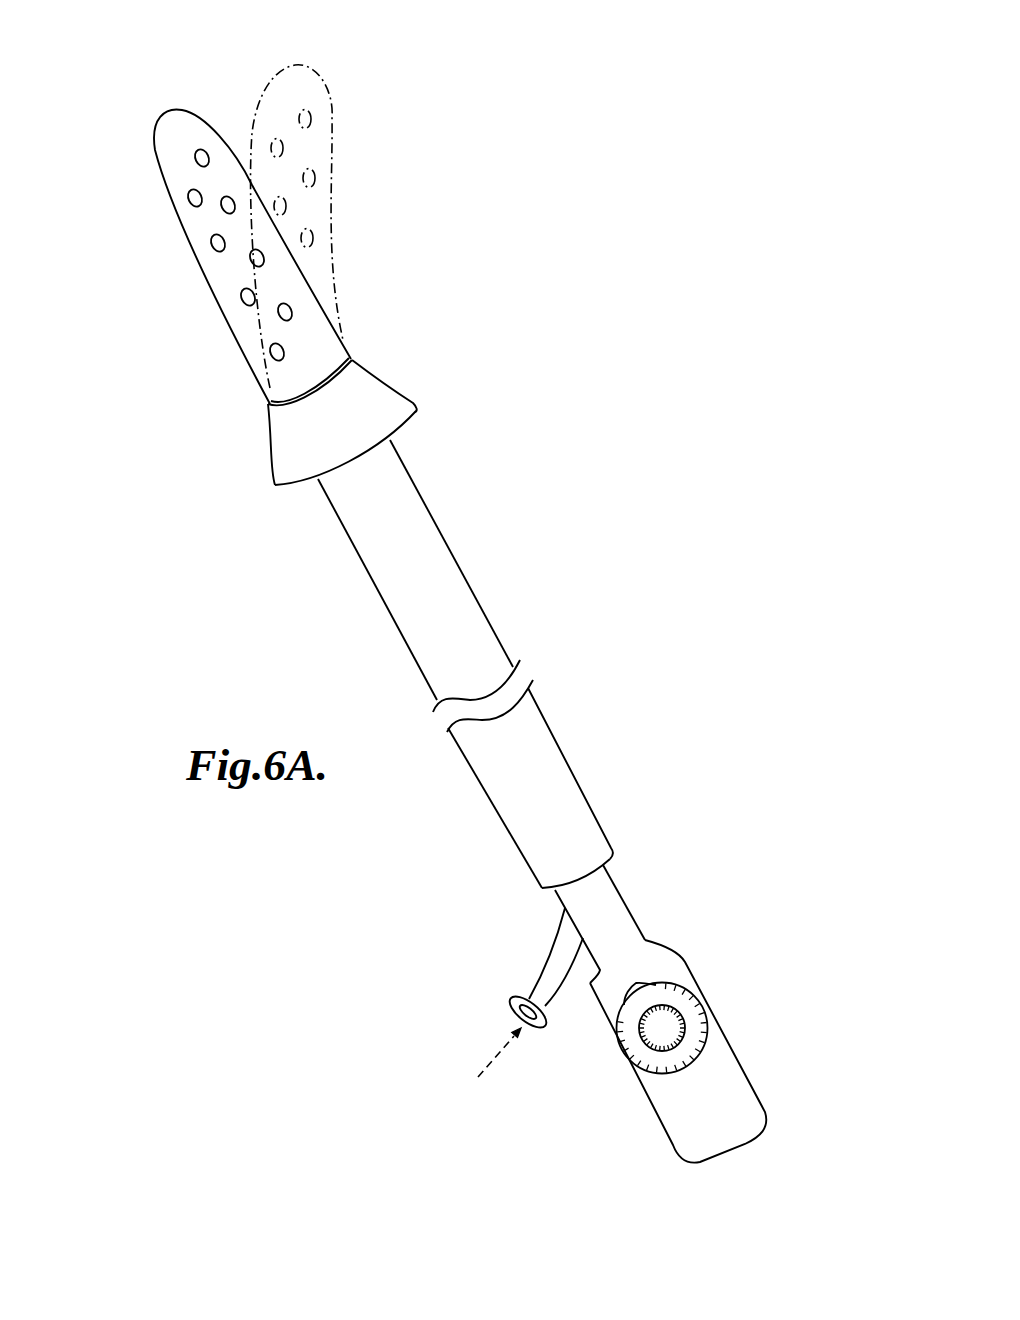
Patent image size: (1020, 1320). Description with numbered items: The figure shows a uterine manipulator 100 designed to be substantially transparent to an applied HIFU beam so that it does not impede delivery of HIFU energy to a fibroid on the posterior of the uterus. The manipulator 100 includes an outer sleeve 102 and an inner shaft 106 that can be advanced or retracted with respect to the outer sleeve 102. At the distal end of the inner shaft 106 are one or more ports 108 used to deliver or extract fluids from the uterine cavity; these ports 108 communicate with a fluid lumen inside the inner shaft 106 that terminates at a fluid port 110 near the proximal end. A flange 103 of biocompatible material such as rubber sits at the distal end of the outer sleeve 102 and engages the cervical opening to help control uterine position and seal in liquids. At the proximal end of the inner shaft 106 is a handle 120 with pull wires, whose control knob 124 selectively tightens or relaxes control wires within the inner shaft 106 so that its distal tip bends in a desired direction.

The uterine manipulator 100 is at (520, 347).
The outer sleeve 102 is at (388, 601).
The flange 103 is at (392, 392).
The inner shaft 106 is at (208, 276).
The ports 108 is at (189, 196).
The fluid port 110 is at (511, 1007).
The handle with pull wires 120 is at (703, 990).
The knob 124 is at (707, 1022).